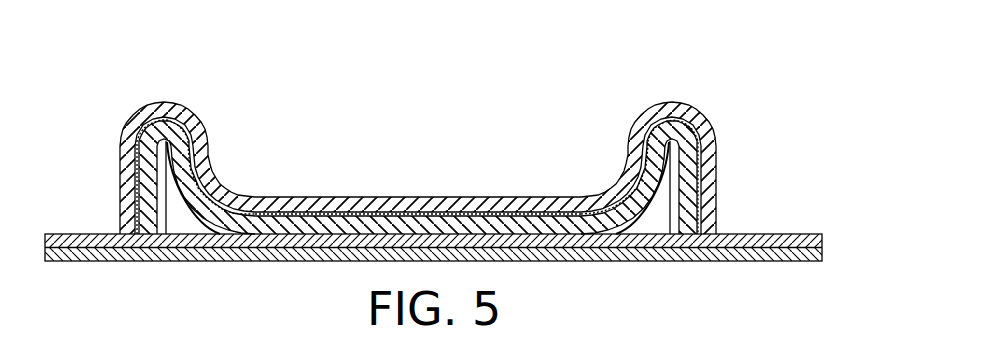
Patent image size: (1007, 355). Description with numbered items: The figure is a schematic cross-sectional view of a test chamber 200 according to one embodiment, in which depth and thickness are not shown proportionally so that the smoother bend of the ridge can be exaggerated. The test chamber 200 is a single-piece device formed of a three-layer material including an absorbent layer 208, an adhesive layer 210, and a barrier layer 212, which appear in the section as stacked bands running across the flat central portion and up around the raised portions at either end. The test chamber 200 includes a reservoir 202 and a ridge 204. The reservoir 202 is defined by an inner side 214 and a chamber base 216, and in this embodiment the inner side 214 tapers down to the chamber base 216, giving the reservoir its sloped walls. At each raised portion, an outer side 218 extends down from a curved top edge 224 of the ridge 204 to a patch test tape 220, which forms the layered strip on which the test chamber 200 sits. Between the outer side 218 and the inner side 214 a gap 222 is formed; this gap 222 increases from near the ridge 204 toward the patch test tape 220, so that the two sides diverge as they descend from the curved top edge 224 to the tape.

The test chamber 200 is at (708, 70).
The reservoir 202 is at (426, 126).
The ridge 204 is at (189, 126).
The absorbent layer 208 is at (282, 206).
The adhesive layer 210 is at (333, 213).
The barrier layer 212 is at (452, 226).
The inner side 214 is at (211, 140).
The chamber base 216 is at (512, 197).
The outer side 218 is at (714, 157).
The patch test tape 220 is at (785, 233).
The gap 222 is at (165, 173).
The curved top edge 224 is at (167, 101).